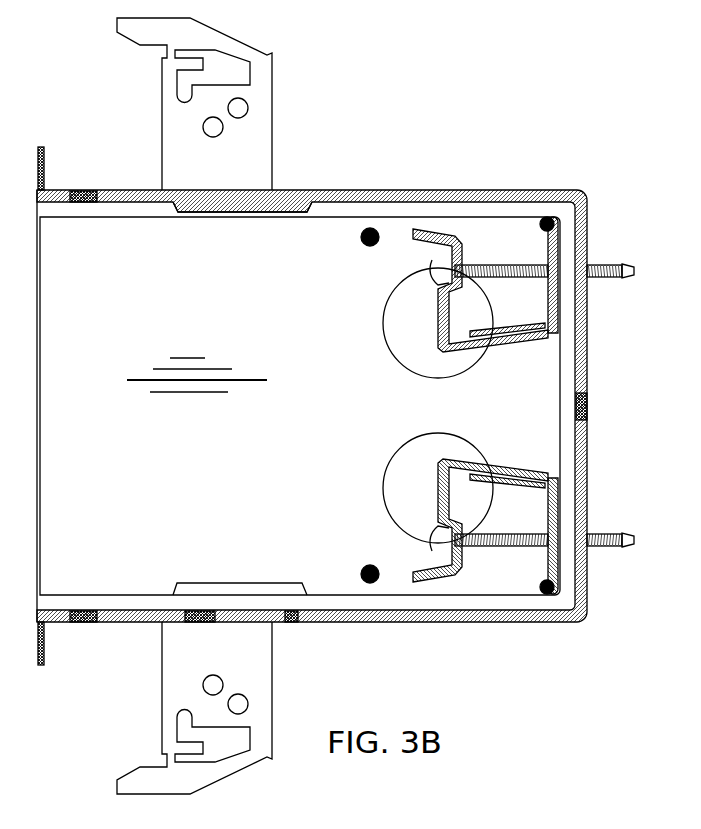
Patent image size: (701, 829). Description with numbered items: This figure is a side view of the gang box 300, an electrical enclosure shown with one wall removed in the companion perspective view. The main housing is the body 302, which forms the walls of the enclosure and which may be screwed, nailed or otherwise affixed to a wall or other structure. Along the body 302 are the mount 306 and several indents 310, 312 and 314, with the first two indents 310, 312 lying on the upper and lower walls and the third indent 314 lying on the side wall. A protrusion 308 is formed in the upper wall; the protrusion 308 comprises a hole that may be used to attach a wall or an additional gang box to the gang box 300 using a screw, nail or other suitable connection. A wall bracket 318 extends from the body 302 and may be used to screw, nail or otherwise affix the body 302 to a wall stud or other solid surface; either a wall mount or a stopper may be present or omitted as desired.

The gang box 300 is at (349, 357).
The body 302 is at (589, 218).
The mount 306 is at (43, 152).
The protrusion 308 is at (263, 198).
The indent 310 is at (86, 192).
The indent 312 is at (80, 623).
The indent 314 is at (589, 402).
The wall bracket 318 is at (248, 145).